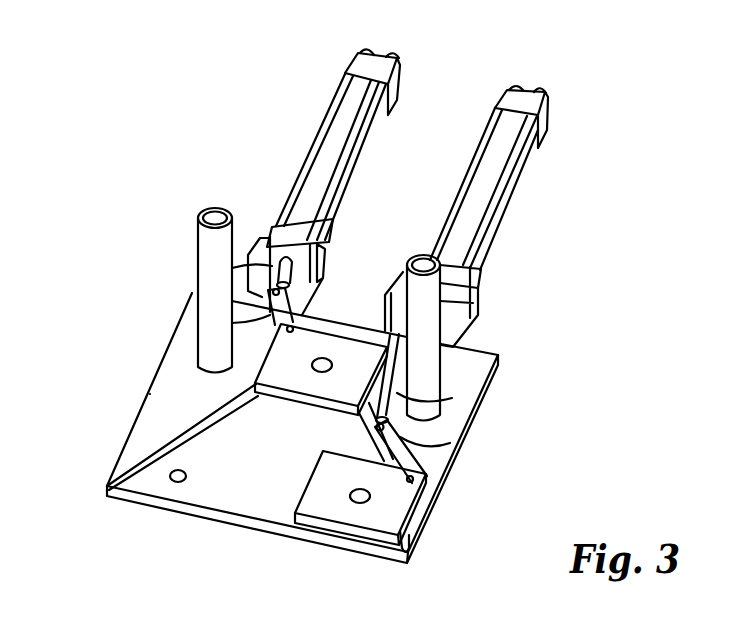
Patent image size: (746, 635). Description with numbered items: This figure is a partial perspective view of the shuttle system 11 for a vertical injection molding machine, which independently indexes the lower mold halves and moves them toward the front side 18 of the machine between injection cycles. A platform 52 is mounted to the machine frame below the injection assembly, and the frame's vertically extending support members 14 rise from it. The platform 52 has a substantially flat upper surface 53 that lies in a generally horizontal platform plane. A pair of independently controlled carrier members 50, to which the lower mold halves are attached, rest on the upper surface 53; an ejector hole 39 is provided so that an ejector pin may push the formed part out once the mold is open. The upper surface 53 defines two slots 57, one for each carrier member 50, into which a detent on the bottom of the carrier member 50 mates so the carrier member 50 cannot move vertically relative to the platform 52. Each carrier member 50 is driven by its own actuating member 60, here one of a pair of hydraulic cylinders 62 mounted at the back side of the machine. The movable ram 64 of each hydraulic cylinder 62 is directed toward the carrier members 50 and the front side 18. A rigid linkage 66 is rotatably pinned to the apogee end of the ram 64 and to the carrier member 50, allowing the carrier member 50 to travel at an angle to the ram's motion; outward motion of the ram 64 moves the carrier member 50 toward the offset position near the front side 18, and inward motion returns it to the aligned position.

The shuttle system 11 is at (585, 438).
The vertically extending support members 14 is at (199, 250).
The front side 18 is at (272, 541).
The ejector hole 39 is at (177, 484).
The carrier member 50 is at (262, 382).
The platform 52 is at (120, 454).
The upper surface 53 is at (158, 413).
The slot 57 is at (330, 428).
The actuating member 60 is at (585, 149).
The hydraulic cylinder 62 is at (495, 100).
The ram 64 is at (280, 267).
The rigid linkage 66 is at (273, 318).